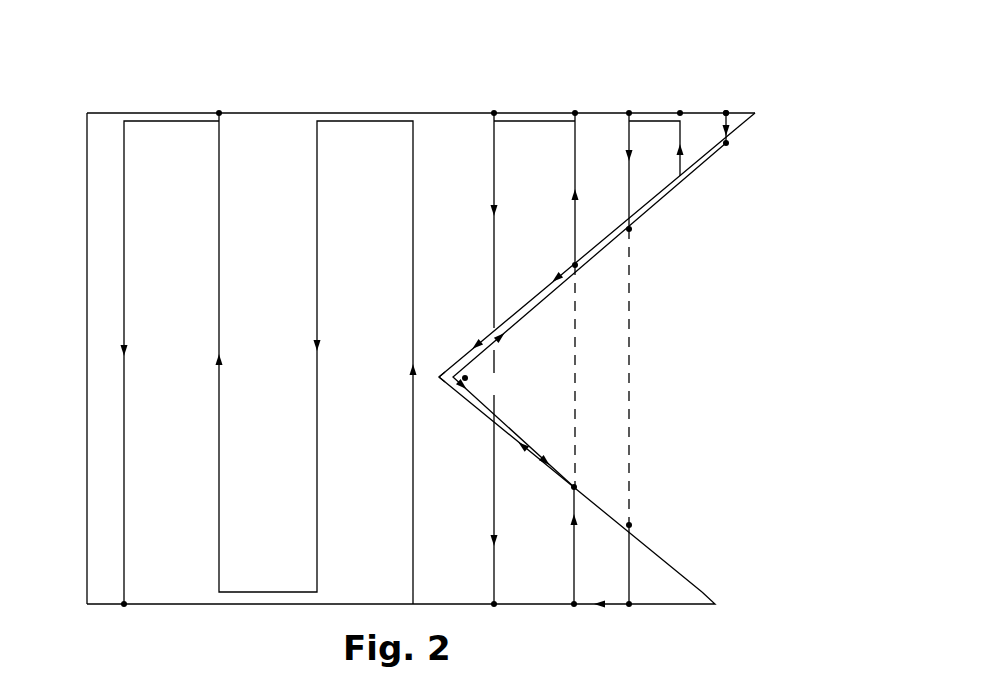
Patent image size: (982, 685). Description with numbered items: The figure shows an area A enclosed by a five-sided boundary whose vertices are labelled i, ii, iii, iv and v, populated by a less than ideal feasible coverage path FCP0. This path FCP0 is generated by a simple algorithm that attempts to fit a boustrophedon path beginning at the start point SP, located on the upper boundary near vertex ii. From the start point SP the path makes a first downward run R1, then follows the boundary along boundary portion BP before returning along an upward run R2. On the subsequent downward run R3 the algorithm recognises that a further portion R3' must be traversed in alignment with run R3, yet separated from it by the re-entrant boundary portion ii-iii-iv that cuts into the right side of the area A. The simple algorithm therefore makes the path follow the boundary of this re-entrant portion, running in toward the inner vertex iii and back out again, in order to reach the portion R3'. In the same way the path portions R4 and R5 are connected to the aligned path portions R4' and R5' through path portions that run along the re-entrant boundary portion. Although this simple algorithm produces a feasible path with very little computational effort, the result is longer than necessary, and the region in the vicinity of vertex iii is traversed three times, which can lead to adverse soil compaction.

The vertex i is at (86, 113).
The vertex ii is at (755, 114).
The vertex iii is at (467, 377).
The vertex iv is at (716, 603).
The vertex v is at (87, 604).
The area A is at (445, 113).
The start point SP is at (736, 97).
The boundary portion BP is at (697, 167).
The feasible coverage path FCP0 is at (725, 125).
The first downward run R1 is at (734, 71).
The upward run R2 is at (658, 128).
The downward run R3 is at (667, 187).
The path portion R3' is at (677, 560).
The path portion R4 is at (547, 132).
The path portion R4' is at (644, 514).
The path portion R5 is at (417, 196).
The path portion R5' is at (528, 530).